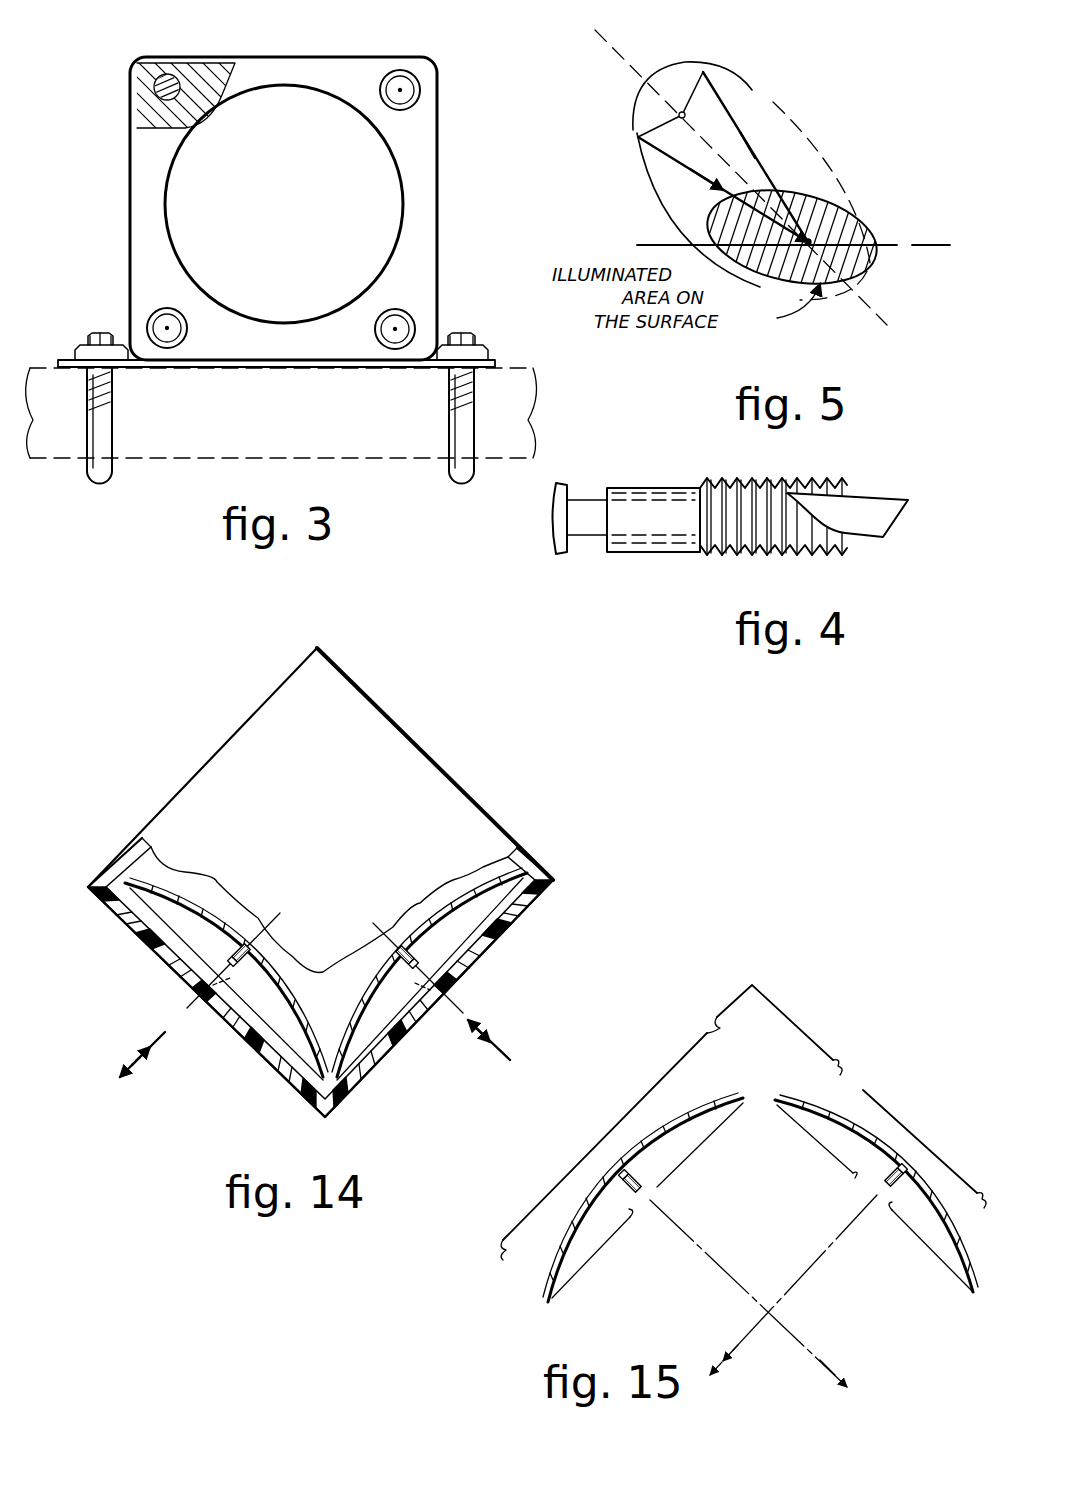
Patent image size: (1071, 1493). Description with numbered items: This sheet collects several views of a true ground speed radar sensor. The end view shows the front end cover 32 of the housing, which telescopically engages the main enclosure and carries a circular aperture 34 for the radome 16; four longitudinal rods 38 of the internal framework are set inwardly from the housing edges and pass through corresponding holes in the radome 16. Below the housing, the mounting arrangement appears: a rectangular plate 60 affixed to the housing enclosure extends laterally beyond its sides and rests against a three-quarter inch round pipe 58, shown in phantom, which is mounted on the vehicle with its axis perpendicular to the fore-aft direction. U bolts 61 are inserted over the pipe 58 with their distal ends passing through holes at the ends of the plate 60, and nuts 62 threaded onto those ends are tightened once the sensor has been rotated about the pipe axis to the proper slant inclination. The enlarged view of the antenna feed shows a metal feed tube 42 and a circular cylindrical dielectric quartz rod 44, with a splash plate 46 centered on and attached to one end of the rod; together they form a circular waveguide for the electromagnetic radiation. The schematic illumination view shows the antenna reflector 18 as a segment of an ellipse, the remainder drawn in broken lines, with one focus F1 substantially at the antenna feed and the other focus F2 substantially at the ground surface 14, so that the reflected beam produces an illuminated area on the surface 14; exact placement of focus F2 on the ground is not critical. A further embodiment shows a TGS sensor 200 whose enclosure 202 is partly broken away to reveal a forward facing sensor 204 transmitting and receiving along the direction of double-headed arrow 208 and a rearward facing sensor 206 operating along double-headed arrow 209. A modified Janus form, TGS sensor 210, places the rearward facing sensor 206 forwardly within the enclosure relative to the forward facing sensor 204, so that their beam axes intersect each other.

In FIG. 5, the surface 14 is at (937, 248).
In FIG. 3, the radome 16 is at (205, 70).
In FIG. 5, the antenna reflector 18 is at (683, 62).
In FIG. 3, the cover 32 is at (342, 72).
In FIG. 3, the circular aperture 34 is at (380, 175).
In FIG. 3, the longitudinal rods 38 is at (177, 77).
In FIG. 4, the feed tube 42 is at (618, 488).
In FIG. 4, the quartz rod 44 is at (862, 500).
In FIG. 4, the splash plate 46 is at (563, 548).
In FIG. 3, the round pipe 58 is at (510, 462).
In FIG. 3, the rectangular plate 60 is at (58, 362).
In FIG. 3, the U bolts 61 is at (113, 468).
In FIG. 3, the nuts 62 is at (72, 345).
In FIG. 5, the focus F1 is at (690, 118).
In FIG. 5, the focus F2 is at (820, 233).
In FIG. 14, the TGS sensor 200 is at (363, 688).
In FIG. 14, the enclosure 202 is at (393, 777).
In FIG. 14, the forward facing sensor 204 is at (258, 1053).
In FIG. 15, the forward facing sensor 204 is at (857, 1130).
In FIG. 14, the rearward facing sensor 206 is at (503, 935).
In FIG. 15, the rearward facing sensor 206 is at (680, 1115).
In FIG. 14, the double-headed arrow 208 is at (140, 1053).
In FIG. 14, the double-headed arrow 209 is at (492, 1040).
In FIG. 15, the TGS sensor 210 is at (782, 1003).